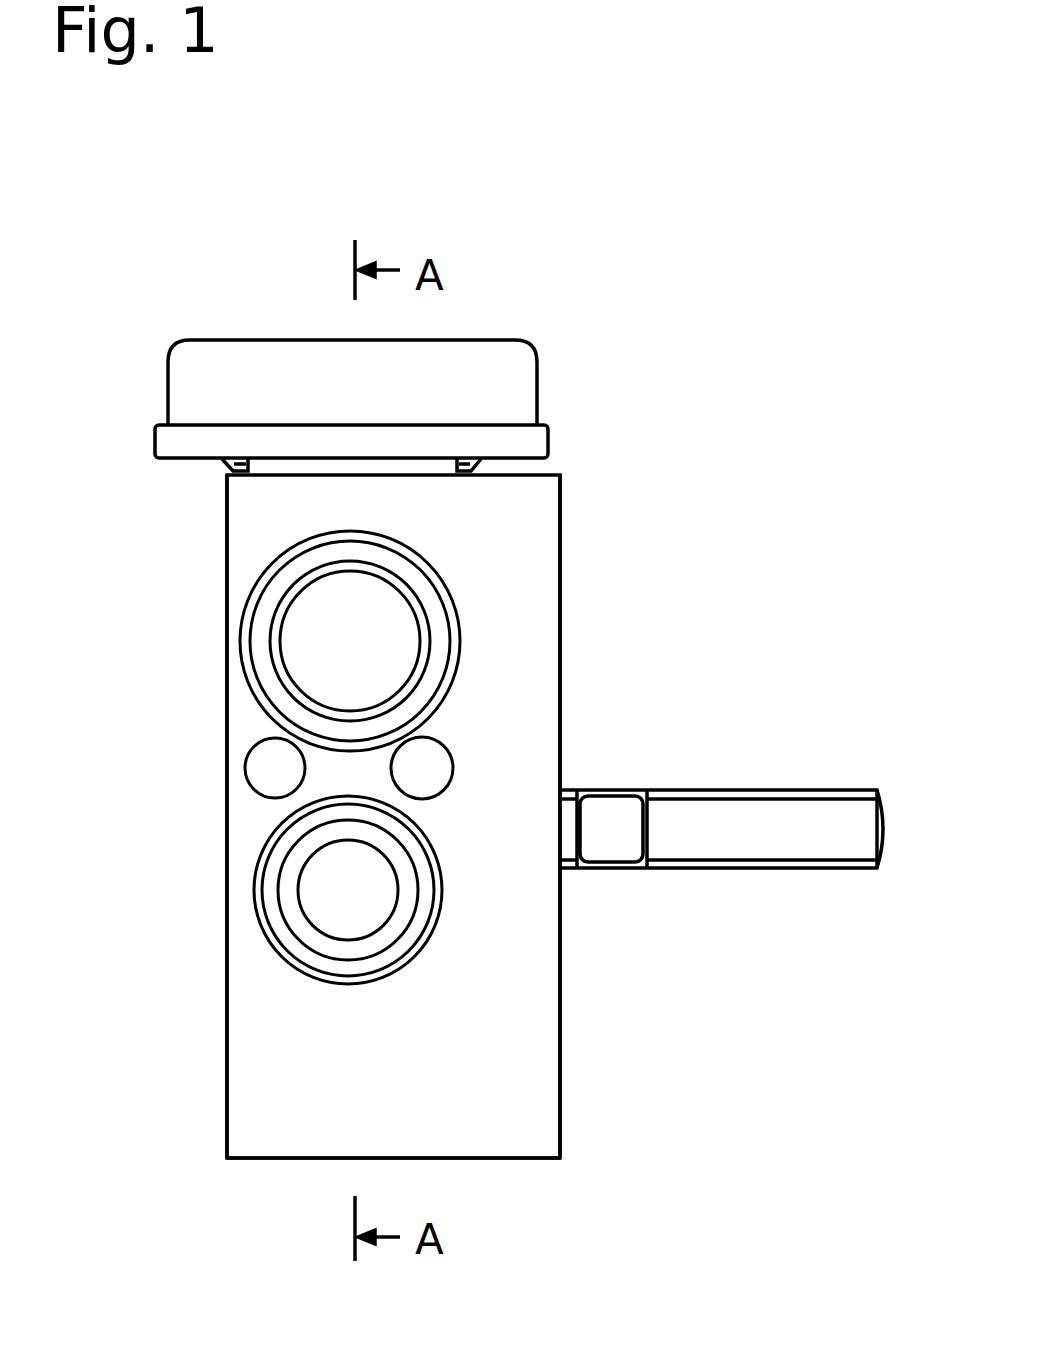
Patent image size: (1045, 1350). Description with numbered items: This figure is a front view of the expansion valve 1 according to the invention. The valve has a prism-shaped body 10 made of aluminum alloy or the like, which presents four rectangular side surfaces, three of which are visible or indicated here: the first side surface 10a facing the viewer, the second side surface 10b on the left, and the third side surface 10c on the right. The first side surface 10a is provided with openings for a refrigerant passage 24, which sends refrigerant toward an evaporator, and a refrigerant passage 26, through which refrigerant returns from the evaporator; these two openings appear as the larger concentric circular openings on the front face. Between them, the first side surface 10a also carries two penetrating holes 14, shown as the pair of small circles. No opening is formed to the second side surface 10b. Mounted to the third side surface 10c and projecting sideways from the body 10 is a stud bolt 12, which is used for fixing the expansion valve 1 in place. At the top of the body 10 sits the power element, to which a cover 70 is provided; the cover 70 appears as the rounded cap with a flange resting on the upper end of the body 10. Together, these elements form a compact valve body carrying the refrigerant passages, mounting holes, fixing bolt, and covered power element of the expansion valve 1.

The expansion valve 1 is at (722, 316).
The body 10 is at (529, 1077).
The first side surface 10a is at (266, 1113).
The second side surface 10b is at (226, 953).
The third side surface 10c is at (560, 958).
The stud bolt 12 is at (680, 812).
The penetrating holes 14 is at (417, 768).
The refrigerant passage 24 is at (313, 875).
The refrigerant passage 26 is at (308, 643).
The cover 70 is at (518, 392).